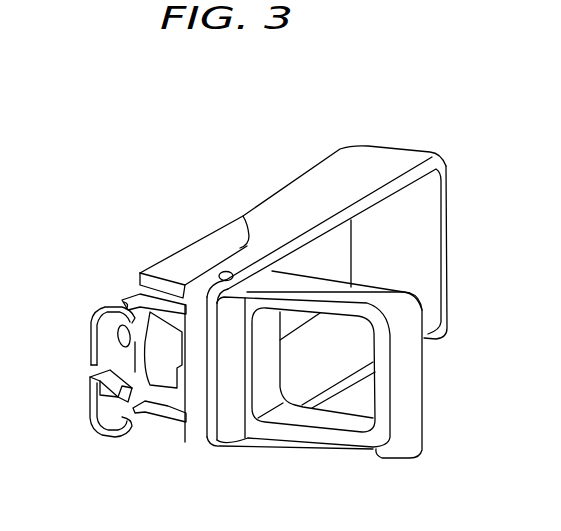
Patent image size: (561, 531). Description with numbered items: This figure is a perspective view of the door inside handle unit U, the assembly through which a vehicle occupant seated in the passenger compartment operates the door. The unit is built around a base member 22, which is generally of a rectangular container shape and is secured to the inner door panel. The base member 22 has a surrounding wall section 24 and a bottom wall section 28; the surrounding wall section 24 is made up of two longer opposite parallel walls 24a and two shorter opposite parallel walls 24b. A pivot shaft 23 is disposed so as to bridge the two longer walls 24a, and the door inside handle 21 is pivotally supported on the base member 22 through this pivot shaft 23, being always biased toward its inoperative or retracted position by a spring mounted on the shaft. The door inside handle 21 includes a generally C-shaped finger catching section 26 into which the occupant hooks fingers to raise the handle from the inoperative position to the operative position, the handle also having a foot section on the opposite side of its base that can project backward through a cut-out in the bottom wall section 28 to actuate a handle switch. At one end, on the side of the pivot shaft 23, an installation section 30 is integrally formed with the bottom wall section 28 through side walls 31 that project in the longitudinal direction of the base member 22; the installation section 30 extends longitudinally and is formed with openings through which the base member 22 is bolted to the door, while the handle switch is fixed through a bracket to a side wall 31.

The door inside handle unit U is at (448, 143).
The door inside handle 21 is at (327, 450).
The base member 22 is at (311, 169).
The pivot shaft 23 is at (224, 271).
The surrounding wall section 24 is at (450, 204).
The longer opposite parallel walls 24a is at (378, 200).
The shorter opposite parallel walls 24b is at (447, 250).
The finger catching section 26 is at (410, 400).
The bottom wall section 28 is at (337, 244).
The installation section 30 is at (87, 343).
The side walls 31 is at (138, 293).